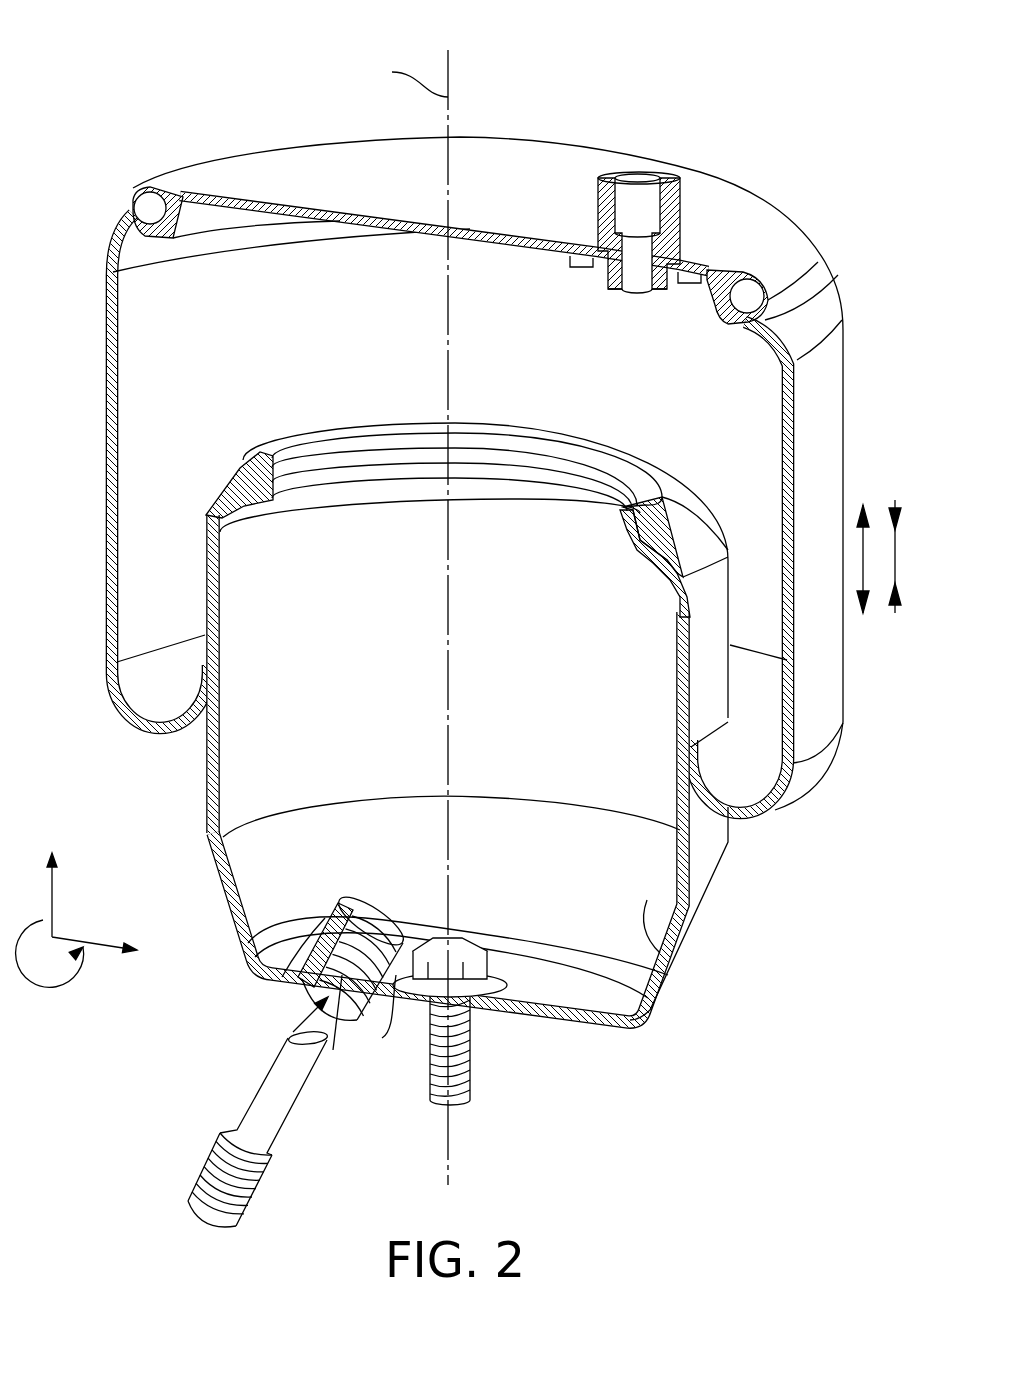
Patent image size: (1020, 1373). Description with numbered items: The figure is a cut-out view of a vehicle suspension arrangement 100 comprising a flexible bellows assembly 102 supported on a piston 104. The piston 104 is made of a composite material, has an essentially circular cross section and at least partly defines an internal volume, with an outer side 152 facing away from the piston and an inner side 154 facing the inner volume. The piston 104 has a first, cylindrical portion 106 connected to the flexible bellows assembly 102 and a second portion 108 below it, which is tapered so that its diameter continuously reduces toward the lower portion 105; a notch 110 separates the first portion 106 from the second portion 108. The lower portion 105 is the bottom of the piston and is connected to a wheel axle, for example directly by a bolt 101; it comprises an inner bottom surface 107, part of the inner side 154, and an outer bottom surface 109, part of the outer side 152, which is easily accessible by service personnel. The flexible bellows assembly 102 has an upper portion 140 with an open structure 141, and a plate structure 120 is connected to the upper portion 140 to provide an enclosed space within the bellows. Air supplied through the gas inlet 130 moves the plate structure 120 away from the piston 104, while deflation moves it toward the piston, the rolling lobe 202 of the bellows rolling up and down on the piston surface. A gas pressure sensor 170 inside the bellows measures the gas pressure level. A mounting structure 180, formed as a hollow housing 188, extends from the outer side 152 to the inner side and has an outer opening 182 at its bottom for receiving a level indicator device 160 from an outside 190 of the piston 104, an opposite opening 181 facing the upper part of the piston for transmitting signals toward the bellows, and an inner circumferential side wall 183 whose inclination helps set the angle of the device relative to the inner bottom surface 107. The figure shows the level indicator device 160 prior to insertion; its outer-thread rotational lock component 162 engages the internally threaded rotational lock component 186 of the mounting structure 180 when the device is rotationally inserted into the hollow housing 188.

The vehicle suspension arrangement 100 is at (138, 56).
The bolt 101 is at (460, 1053).
The flexible bellows assembly 102 is at (817, 427).
The piston 104 is at (468, 765).
The lower portion 105 is at (597, 1028).
The first cylindrical portion 106 is at (265, 720).
The inner bottom surface 107 is at (553, 980).
The second portion 108 is at (289, 849).
The outer bottom surface 109 is at (608, 1026).
The notch 110 is at (223, 832).
The plate structure 120 is at (488, 207).
The gas inlet 130 is at (693, 199).
The upper portion 140 is at (765, 282).
The open structure 141 is at (481, 278).
The outer side 152 is at (692, 923).
The inner side 154 is at (687, 970).
The level indicator device 160 is at (230, 1146).
The rotational lock component 162 is at (218, 1193).
The gas pressure sensor 170 is at (708, 262).
The mounting structure 180 is at (272, 987).
The opposite opening 181 is at (392, 905).
The outer opening 182 is at (280, 1022).
The inner circumferential side wall 183 is at (308, 920).
The rotational lock component 186 is at (333, 1050).
The hollow housing 188 is at (358, 966).
The outside 190 is at (106, 1070).
The rolling lobe 202 is at (763, 813).